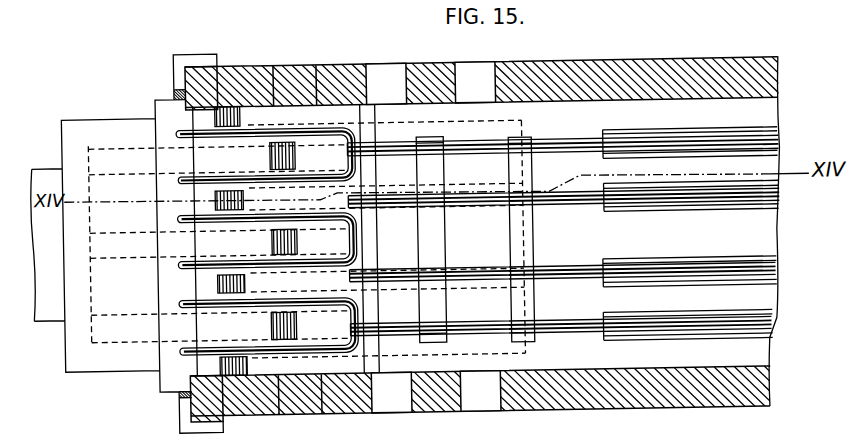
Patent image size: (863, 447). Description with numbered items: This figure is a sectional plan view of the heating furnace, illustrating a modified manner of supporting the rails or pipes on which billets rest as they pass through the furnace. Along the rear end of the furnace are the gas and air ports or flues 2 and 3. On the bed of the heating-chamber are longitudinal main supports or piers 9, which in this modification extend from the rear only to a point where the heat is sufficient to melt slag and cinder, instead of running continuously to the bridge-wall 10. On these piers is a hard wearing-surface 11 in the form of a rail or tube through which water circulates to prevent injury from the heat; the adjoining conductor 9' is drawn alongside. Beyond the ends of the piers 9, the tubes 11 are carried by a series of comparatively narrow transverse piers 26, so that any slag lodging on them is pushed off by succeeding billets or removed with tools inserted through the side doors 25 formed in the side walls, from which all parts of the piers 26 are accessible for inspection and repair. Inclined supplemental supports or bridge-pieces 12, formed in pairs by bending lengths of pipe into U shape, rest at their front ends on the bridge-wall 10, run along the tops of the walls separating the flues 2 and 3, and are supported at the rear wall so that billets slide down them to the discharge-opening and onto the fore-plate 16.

The gas port or flue 2 is at (304, 324).
The air port or flue 3 is at (259, 363).
The main support or pier 9 is at (564, 236).
The conductor 9' is at (564, 184).
The bridge-wall 10 is at (377, 236).
The wearing-surface or tube 11 is at (478, 321).
The supplemental support or bridge-piece 12 is at (236, 343).
The fore-plate 16 is at (125, 245).
The side door 25 is at (480, 239).
The transverse pier 26 is at (511, 237).